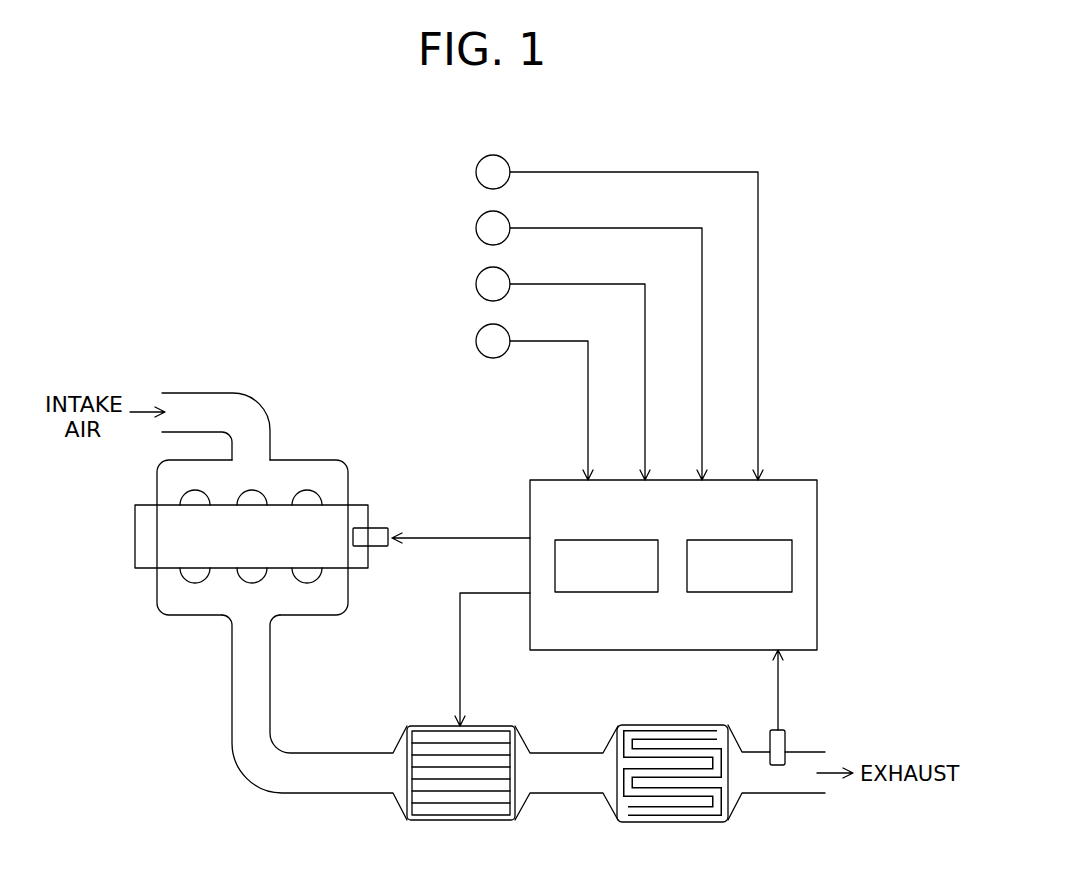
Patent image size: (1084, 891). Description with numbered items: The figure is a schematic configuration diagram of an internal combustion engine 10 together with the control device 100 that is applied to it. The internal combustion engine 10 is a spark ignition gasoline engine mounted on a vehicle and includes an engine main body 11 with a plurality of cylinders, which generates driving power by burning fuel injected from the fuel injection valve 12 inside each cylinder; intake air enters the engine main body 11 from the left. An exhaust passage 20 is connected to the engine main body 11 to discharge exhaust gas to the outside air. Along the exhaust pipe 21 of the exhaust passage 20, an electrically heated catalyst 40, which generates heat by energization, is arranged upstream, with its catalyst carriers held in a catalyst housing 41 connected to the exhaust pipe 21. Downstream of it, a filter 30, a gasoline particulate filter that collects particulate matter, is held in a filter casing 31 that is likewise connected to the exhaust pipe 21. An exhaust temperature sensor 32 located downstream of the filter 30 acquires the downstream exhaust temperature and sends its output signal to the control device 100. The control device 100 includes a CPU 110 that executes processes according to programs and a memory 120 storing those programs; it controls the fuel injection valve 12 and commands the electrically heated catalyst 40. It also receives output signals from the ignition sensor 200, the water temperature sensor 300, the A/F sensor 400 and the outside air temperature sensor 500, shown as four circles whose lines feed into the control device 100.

The internal combustion engine 10 is at (388, 476).
The engine main body 11 is at (135, 536).
The fuel injection valve 12 is at (392, 527).
The exhaust passage 20 is at (237, 798).
The exhaust pipe 21 is at (335, 795).
The filter 30 is at (672, 800).
The filter casing 31 is at (735, 807).
The exhaust temperature sensor 32 is at (786, 742).
The electrically heated catalyst 40 is at (460, 805).
The catalyst housing 41 is at (519, 812).
The control device 100 is at (793, 477).
The CPU 110 is at (580, 538).
The memory 120 is at (710, 538).
The ignition sensor 200 is at (476, 172).
The water temperature sensor 300 is at (476, 228).
The A/F sensor 400 is at (476, 284).
The outside air temperature sensor 500 is at (476, 341).